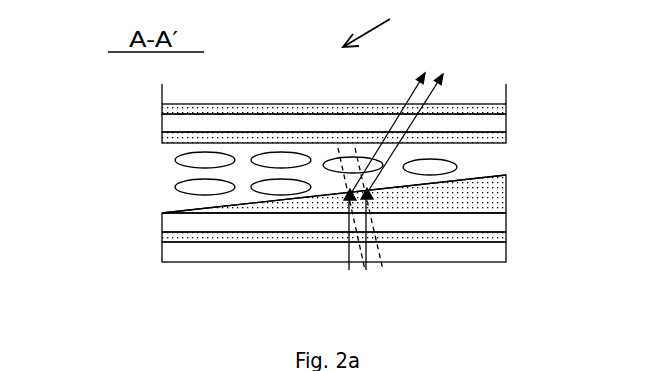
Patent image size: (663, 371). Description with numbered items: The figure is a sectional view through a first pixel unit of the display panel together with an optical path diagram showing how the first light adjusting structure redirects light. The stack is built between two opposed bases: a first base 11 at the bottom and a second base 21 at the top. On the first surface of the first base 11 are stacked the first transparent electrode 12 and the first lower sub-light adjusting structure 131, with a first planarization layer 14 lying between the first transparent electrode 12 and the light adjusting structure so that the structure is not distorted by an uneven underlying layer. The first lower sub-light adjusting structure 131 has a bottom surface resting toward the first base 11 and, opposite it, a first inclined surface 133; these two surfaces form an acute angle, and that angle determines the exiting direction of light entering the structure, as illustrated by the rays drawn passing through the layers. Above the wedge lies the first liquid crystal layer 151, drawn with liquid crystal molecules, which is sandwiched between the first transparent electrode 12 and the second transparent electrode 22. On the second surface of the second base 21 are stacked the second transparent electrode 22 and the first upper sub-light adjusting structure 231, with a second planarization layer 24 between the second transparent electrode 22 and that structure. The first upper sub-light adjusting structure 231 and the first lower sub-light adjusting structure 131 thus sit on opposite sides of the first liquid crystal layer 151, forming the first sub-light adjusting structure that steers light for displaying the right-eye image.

The first base 11 is at (170, 256).
The first transparent electrode 12 is at (168, 237).
The first planarization layer 14 is at (170, 220).
The first lower sub-light adjusting structure 131 is at (207, 210).
The first inclined surface 133 is at (491, 172).
The first liquid crystal layer 151 is at (167, 170).
The first upper sub-light adjusting structure 231 is at (165, 138).
The second planarization layer 24 is at (170, 122).
The second transparent electrode 22 is at (165, 108).
The second base 21 is at (170, 90).